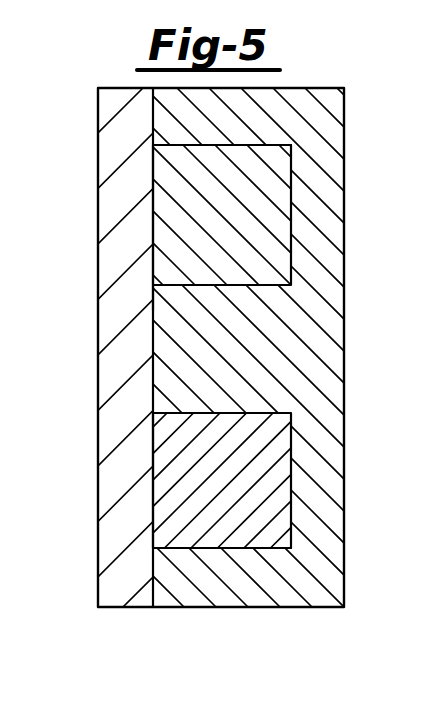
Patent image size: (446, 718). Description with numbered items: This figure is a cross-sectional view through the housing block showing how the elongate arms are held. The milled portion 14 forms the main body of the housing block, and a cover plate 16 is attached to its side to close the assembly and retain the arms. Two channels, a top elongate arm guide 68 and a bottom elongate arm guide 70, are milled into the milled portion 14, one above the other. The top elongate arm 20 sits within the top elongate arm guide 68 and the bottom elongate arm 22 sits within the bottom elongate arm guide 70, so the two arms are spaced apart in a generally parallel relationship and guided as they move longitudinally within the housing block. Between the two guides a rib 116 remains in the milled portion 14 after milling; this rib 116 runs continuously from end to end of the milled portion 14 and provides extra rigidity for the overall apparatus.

The milled portion 14 is at (344, 391).
The cover plate 16 is at (98, 170).
The top elongate arm 20 is at (291, 220).
The bottom elongate arm 22 is at (291, 494).
The top elongate arm guide 68 is at (266, 140).
The bottom elongate arm guide 70 is at (182, 544).
The rib 116 is at (153, 298).